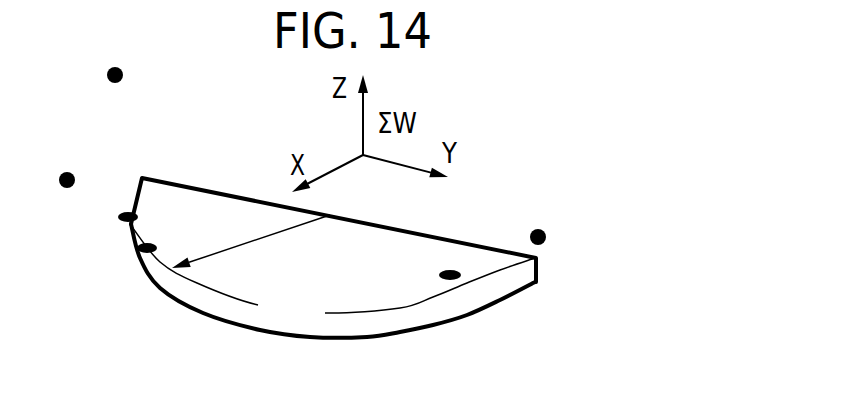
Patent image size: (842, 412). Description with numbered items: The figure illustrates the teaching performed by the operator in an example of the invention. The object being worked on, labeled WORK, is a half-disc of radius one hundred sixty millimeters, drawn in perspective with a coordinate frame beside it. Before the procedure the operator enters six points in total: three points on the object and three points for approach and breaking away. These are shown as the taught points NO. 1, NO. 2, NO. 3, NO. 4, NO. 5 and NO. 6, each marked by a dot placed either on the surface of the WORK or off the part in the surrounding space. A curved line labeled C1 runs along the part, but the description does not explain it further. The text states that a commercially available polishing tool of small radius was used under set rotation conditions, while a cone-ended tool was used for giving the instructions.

The teaching point 1 is at (150, 77).
The teaching point 2 is at (79, 162).
The teaching point 3 is at (164, 212).
The teaching point 4 is at (110, 259).
The teaching point 5 is at (417, 281).
The teaching point 6 is at (549, 217).
The curved edge line C1 is at (255, 312).
The object being worked on WORK is at (333, 258).